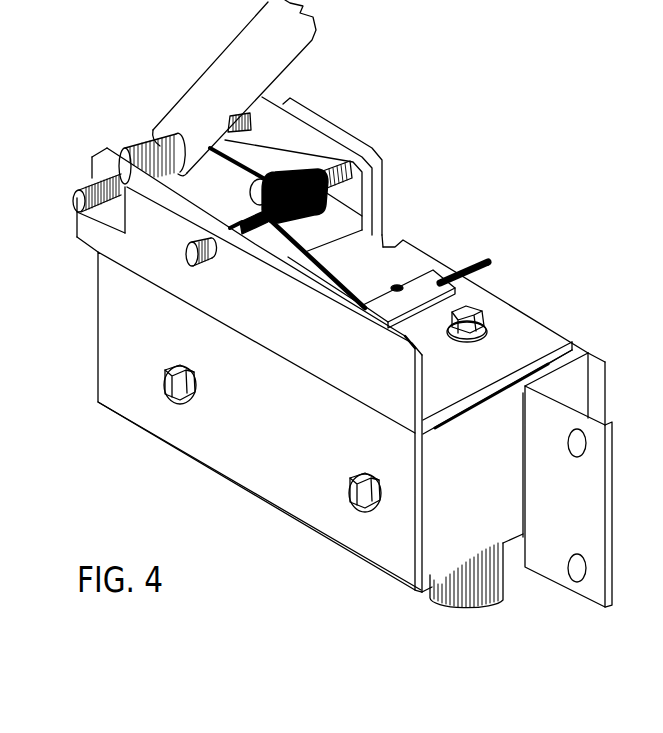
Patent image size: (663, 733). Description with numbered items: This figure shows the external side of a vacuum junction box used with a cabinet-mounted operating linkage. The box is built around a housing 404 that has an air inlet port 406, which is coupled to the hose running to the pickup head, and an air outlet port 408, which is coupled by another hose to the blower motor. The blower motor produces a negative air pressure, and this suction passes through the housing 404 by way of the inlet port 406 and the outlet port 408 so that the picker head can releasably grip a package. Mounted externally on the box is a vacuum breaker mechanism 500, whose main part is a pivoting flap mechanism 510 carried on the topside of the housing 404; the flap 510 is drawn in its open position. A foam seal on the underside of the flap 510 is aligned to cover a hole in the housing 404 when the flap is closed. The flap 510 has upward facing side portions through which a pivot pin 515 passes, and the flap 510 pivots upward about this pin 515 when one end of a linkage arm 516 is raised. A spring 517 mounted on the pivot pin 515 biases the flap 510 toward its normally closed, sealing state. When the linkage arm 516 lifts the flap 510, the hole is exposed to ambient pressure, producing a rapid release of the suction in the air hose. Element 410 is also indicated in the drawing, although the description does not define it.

The vacuum breaker mechanism 500 is at (113, 106).
The housing 404 is at (293, 427).
The air inlet port 406 is at (203, 467).
The air outlet port 408 is at (427, 600).
The top mounting plate 410 is at (416, 288).
The pivoting flap mechanism 510 is at (88, 178).
The pivot pin 515 is at (190, 266).
The linkage arm 516 is at (295, 63).
The spring 517 is at (297, 168).